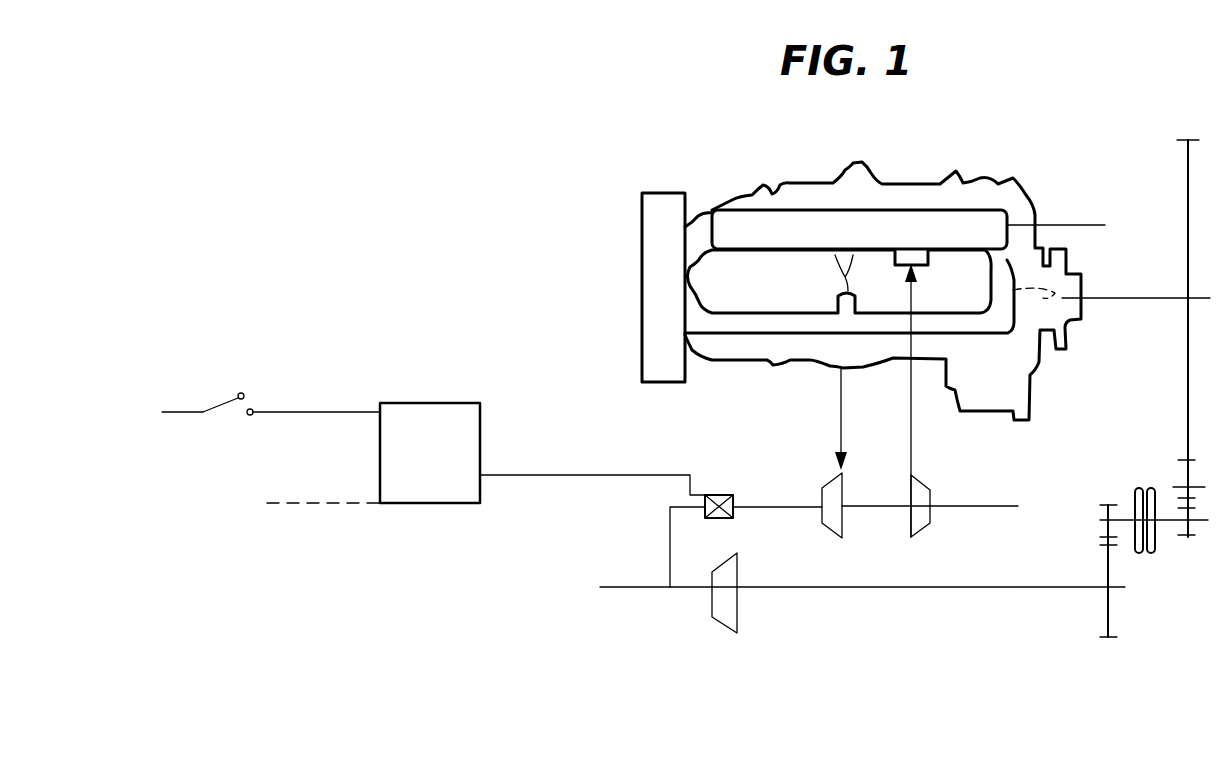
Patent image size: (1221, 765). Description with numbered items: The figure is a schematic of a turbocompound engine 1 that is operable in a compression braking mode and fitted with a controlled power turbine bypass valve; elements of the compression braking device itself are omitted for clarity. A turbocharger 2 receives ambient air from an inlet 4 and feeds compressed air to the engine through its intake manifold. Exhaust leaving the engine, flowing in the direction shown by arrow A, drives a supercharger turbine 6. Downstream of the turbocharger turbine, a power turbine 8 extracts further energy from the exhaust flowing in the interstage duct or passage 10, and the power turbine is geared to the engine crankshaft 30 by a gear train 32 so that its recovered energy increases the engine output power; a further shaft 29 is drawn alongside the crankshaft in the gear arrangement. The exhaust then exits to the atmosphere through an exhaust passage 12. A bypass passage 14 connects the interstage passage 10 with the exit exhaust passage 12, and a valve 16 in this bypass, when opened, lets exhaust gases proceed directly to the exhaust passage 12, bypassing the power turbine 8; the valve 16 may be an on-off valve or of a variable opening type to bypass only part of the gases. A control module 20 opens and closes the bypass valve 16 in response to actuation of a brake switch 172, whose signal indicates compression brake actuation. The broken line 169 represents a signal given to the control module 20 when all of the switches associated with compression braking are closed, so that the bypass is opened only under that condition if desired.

The turbocompound engine 1 is at (790, 152).
The turbocharger 2 is at (900, 550).
The inlet 4 is at (980, 505).
The supercharger turbine 6 is at (830, 517).
The power turbine 8 is at (722, 610).
The interstage duct or passage 10 is at (765, 508).
The exhaust passage 12 is at (625, 590).
The bypass passage 14 is at (668, 517).
The valve 16 is at (713, 493).
The control module 20 is at (447, 466).
The camshaft 29 is at (1086, 227).
The engine crankshaft 30 is at (1115, 300).
The gear train 32 is at (1145, 612).
The broken line 169 is at (275, 503).
The brake switch 172 is at (221, 397).
The arrow A is at (852, 424).